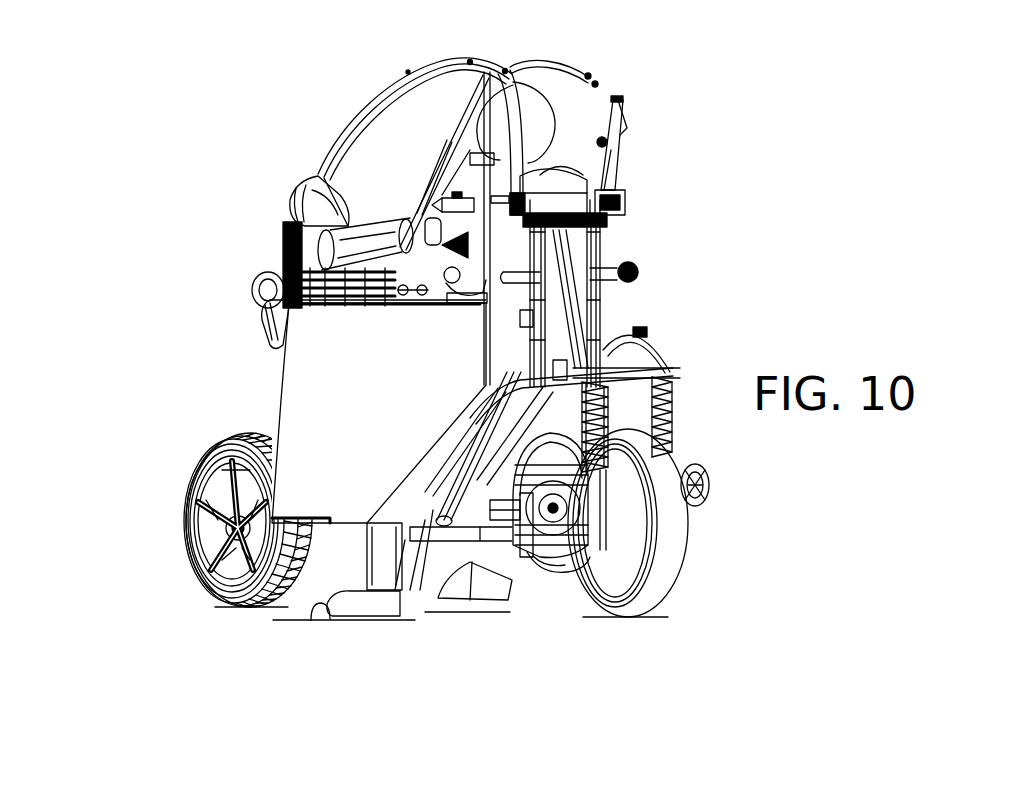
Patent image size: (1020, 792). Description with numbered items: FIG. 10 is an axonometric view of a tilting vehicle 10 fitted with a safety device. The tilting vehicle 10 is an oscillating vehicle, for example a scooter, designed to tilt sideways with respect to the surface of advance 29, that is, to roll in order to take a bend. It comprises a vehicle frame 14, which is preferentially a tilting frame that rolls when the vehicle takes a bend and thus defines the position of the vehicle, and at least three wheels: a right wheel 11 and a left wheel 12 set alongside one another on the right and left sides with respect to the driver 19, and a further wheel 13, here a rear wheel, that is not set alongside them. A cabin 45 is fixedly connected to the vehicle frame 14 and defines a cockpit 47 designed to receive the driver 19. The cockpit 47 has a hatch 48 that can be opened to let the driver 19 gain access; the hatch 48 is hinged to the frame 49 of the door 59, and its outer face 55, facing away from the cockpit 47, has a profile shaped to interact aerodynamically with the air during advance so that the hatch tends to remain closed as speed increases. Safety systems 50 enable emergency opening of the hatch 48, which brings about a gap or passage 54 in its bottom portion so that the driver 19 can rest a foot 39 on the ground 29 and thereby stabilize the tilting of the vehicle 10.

The tilting vehicle 10 is at (652, 209).
The right wheel 11 is at (345, 560).
The left wheel 12 is at (192, 549).
The further wheel 13 is at (668, 565).
The vehicle frame 14 is at (592, 355).
The driver 19 is at (567, 177).
The surface of advance 29 is at (313, 605).
The foot 39 is at (480, 597).
The cabin 45 is at (400, 123).
The cockpit 47 is at (405, 173).
The hatch 48 is at (315, 493).
The frame of the door 49 is at (460, 85).
The safety systems 50 is at (245, 408).
The gap or passage 54 is at (507, 563).
The outer face 55 is at (330, 382).
The door 59 is at (317, 157).